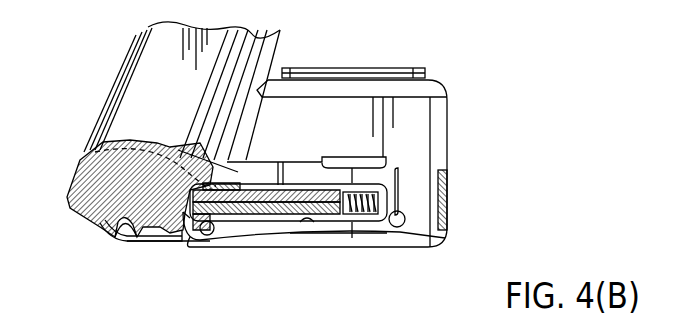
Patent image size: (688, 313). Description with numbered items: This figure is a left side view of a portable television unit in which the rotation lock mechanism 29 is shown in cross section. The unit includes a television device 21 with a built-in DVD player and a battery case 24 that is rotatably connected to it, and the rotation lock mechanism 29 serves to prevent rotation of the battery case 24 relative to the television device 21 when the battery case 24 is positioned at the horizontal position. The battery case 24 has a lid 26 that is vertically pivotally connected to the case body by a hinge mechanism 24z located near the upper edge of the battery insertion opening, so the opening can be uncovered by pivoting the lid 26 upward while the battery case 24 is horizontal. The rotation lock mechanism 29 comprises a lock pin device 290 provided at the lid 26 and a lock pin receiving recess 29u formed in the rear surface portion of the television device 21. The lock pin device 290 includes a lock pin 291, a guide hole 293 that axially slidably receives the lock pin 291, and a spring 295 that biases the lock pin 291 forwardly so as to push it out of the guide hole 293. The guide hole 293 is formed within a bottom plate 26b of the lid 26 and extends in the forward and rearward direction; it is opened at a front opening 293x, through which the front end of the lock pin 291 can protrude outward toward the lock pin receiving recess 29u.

The television device 21 is at (132, 62).
The rotation lock mechanism 29 is at (218, 145).
The lock pin receiving recess 29u is at (123, 143).
The battery case 24 is at (455, 113).
The hinge mechanism 24z is at (398, 75).
The lid 26 is at (403, 118).
The bottom plate 26b is at (410, 147).
The lock pin device 290 is at (252, 177).
The lock pin 291 is at (252, 208).
The guide hole 293 is at (290, 195).
The front opening 293x is at (210, 235).
The spring 295 is at (347, 212).